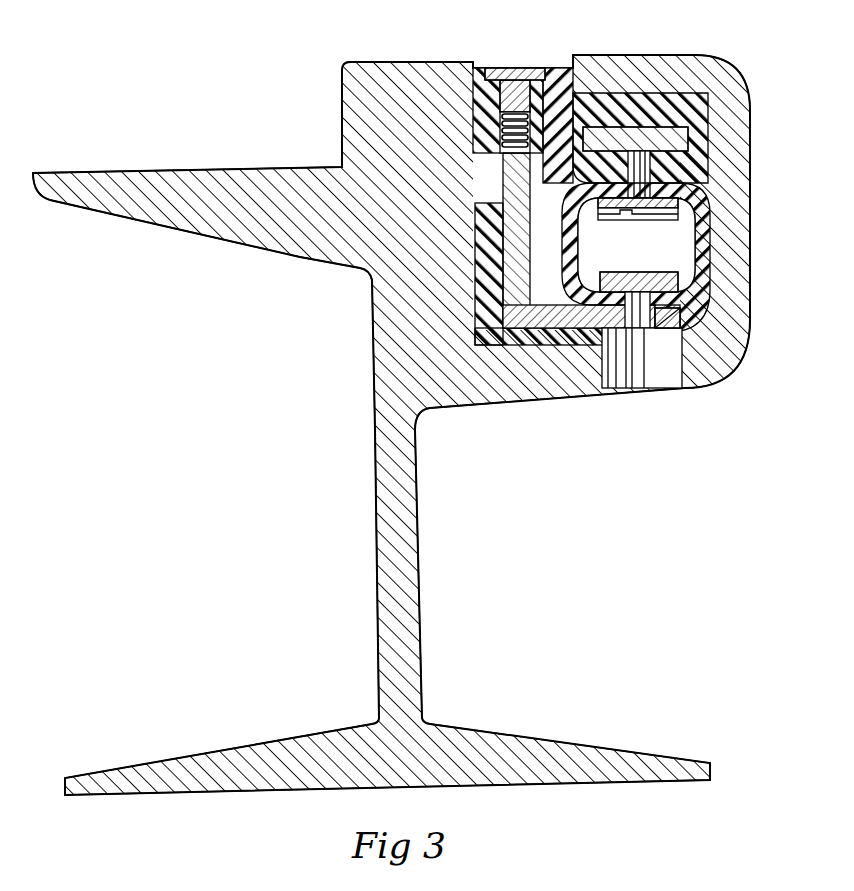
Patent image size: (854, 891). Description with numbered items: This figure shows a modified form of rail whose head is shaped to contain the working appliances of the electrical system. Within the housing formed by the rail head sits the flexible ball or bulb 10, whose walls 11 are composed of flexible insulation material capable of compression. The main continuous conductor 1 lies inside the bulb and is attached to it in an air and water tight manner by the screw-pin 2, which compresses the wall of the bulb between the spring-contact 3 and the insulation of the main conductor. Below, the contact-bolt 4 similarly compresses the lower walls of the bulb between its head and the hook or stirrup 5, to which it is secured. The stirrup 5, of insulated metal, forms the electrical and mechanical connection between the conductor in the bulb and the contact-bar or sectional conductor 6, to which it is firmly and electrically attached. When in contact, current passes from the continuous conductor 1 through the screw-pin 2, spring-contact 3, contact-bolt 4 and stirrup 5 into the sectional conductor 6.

The continuous conductor 1 is at (703, 115).
The screw-pin 2 is at (652, 207).
The spring-contact 3 is at (645, 205).
The contact-bolt 4 is at (665, 275).
The hook or stirrup 5 is at (668, 318).
The contact-bar or sectional conductor 6 is at (533, 72).
The flexible ball or bulb 10 is at (636, 257).
The walls of the ball or bulb 11 is at (566, 233).